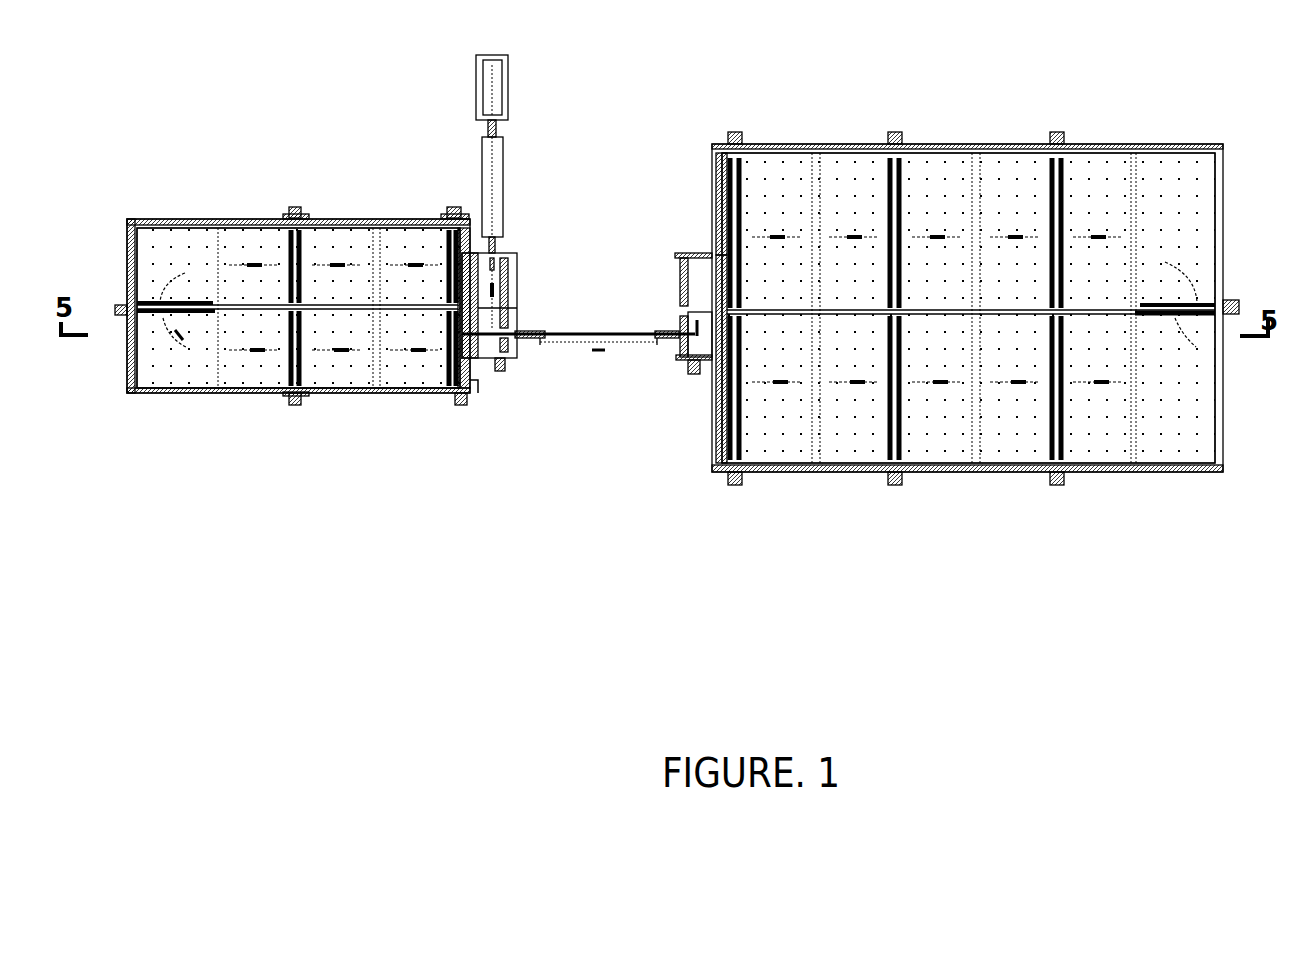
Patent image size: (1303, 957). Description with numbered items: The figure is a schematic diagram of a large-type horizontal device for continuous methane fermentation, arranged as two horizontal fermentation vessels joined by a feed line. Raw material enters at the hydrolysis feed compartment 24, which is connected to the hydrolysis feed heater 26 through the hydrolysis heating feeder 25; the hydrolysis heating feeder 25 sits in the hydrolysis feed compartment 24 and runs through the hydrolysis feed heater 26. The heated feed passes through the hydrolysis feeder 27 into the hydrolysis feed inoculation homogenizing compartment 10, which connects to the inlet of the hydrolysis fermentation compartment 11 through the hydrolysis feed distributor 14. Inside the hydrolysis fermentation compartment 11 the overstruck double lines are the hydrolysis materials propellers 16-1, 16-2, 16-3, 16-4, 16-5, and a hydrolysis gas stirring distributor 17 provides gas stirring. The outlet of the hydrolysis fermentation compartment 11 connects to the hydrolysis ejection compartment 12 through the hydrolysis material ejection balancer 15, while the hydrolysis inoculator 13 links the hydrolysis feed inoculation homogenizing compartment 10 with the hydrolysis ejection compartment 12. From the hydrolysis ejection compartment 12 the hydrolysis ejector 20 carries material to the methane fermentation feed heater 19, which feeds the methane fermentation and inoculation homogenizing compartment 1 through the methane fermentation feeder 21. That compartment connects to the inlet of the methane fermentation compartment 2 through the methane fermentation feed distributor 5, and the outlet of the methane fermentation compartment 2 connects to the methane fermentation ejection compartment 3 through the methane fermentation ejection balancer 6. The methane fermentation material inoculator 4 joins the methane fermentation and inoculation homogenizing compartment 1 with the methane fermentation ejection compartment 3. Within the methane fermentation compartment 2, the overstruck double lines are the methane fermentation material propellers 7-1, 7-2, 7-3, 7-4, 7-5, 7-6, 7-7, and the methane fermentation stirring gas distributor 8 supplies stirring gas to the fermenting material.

The methane fermentation and inoculation homogenizing compartment 1 is at (684, 354).
The methane fermentation compartment 2 is at (795, 452).
The methane fermentation ejection compartment 3 is at (702, 262).
The methane fermentation material inoculator 4 is at (679, 284).
The methane fermentation feed distributor 5 is at (718, 428).
The methane fermentation ejection balancer 6 is at (714, 212).
The methane fermentation material propeller 7-1 is at (728, 480).
The methane fermentation material propeller 7-2 is at (887, 482).
The methane fermentation material propeller 7-3 is at (1050, 482).
The methane fermentation material propeller 7-4 is at (1238, 305).
The methane fermentation material propeller 7-5 is at (1059, 142).
The methane fermentation material propeller 7-6 is at (897, 142).
The methane fermentation material propeller 7-7 is at (736, 142).
The methane fermentation stirring gas distributor 8 is at (848, 452).
The hydrolysis feed inoculation homogenizing compartment 10 is at (509, 300).
The hydrolysis fermentation compartment 11 is at (398, 240).
The hydrolysis ejection compartment 12 is at (510, 320).
The hydrolysis inoculator 13 is at (517, 254).
The hydrolysis feed distributor 14 is at (465, 226).
The hydrolysis material ejection balancer 15 is at (480, 388).
The hydrolysis materials propeller 16-1 is at (447, 212).
The hydrolysis materials propeller 16-2 is at (288, 212).
The hydrolysis materials propeller 16-3 is at (124, 318).
The hydrolysis materials propeller 16-4 is at (290, 407).
The hydrolysis materials propeller 16-5 is at (455, 405).
The hydrolysis gas stirring distributor 17 is at (345, 240).
The methane fermentation feed heater 19 is at (575, 332).
The hydrolysis ejector 20 is at (535, 331).
The methane fermentation feeder 21 is at (660, 331).
The hydrolysis feed compartment 24 is at (508, 74).
The hydrolysis heating feeder 25 is at (495, 105).
The hydrolysis feed heater 26 is at (497, 178).
The hydrolysis feeder 27 is at (497, 243).